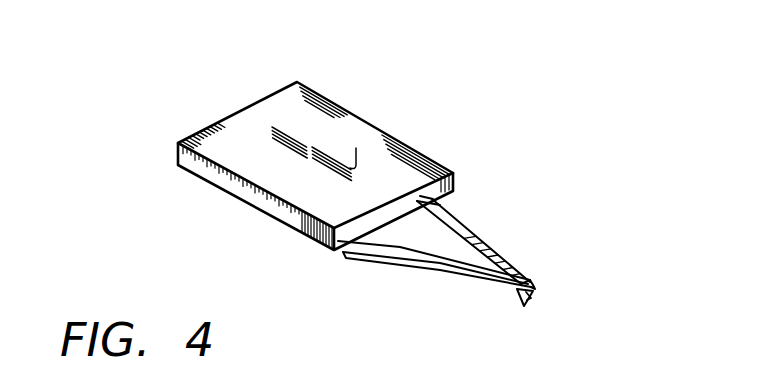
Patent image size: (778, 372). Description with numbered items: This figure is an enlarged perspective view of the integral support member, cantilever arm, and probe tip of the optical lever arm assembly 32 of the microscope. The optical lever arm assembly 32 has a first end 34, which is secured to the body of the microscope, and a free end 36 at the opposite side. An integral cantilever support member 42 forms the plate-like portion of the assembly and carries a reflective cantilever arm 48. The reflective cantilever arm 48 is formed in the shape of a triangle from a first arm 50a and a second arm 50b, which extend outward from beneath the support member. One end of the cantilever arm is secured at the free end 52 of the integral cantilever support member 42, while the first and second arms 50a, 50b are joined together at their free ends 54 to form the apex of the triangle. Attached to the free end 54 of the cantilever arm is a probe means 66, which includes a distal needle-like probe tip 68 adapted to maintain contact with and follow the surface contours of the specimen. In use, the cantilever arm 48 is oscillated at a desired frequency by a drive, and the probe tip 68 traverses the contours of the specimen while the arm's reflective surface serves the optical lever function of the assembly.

The optical lever arm assembly 32 is at (378, 77).
The first end 34 is at (213, 134).
The integral cantilever support member 42 is at (278, 182).
The free end 36 is at (490, 303).
The first arm 50a is at (353, 263).
The second arm 50b is at (513, 260).
The reflective cantilever arm 48 is at (482, 243).
The free end of the integral cantilever support member 52 is at (447, 204).
The free ends of the cantilever arm 54 is at (537, 283).
The probe tip 68 is at (527, 302).
The probe means 66 is at (544, 300).